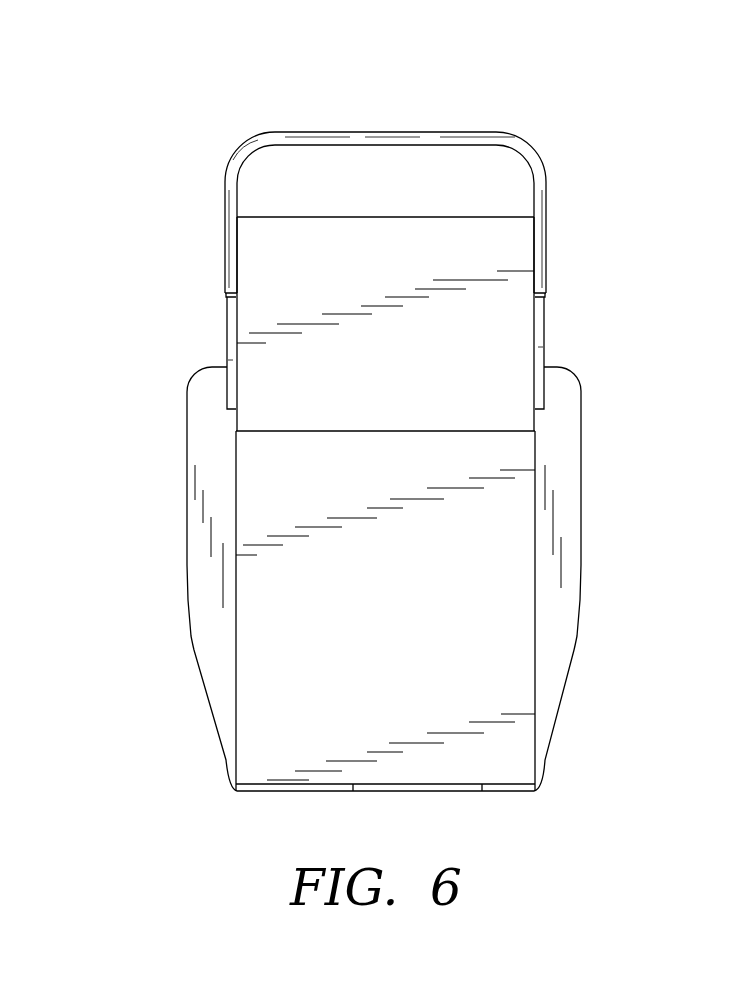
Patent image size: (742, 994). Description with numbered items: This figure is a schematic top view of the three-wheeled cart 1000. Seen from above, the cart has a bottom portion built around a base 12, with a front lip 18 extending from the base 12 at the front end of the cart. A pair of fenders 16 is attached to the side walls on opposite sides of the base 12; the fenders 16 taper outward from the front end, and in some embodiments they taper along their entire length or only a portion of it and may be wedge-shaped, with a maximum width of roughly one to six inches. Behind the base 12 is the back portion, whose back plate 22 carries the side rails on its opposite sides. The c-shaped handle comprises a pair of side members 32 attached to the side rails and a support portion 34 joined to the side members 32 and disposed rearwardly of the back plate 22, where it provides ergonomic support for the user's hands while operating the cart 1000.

The three-wheeled cart 1000 is at (598, 89).
The support portion 34 is at (360, 132).
The side members 32 is at (226, 222).
The back plate 22 is at (411, 371).
The base 12 is at (411, 629).
The fenders 16 is at (226, 460).
The front lip 18 is at (413, 784).